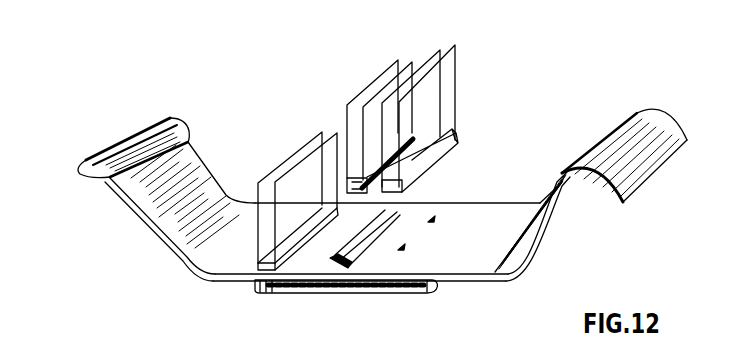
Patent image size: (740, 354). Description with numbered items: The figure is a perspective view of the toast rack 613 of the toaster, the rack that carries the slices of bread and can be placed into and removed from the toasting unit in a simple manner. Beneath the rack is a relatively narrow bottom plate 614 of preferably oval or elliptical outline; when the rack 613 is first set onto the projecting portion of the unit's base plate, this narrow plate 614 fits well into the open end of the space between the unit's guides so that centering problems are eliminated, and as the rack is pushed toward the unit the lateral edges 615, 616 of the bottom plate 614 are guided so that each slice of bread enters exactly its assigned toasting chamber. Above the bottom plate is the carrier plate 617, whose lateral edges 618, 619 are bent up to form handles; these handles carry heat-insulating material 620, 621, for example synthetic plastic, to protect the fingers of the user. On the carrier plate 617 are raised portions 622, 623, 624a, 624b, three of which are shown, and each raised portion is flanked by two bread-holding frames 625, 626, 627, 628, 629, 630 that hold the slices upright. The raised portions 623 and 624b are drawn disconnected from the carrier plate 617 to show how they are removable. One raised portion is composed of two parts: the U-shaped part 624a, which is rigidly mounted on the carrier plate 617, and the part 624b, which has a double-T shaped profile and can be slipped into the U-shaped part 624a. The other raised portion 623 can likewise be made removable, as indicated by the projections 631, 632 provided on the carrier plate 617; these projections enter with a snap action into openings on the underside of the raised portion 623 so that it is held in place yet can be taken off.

The toast rack 613 is at (549, 93).
The bottom plate 614 is at (378, 292).
The lateral edge of bottom plate 615 is at (258, 284).
The lateral edge of bottom plate 616 is at (438, 284).
The carrier plate 617 is at (493, 212).
The lateral edge of carrier plate 618 is at (188, 167).
The lateral edge of carrier plate 619 is at (562, 170).
The heat-insulating material 620 is at (152, 120).
The heat-insulating material 621 is at (657, 165).
The raised portion 622 is at (312, 218).
The raised portion 623 is at (459, 146).
The U-shaped part of raised portion 624a is at (358, 247).
The double-T shaped part of raised portion 624b is at (418, 138).
The bread-holding frame 625 is at (255, 195).
The bread-holding frame 626 is at (312, 150).
The bread-holding frame 627 is at (370, 85).
The bread-holding frame 628 is at (403, 62).
The bread-holding frame 629 is at (426, 66).
The bread-holding frame 630 is at (450, 52).
The projection 631 is at (435, 220).
The projection 632 is at (407, 247).